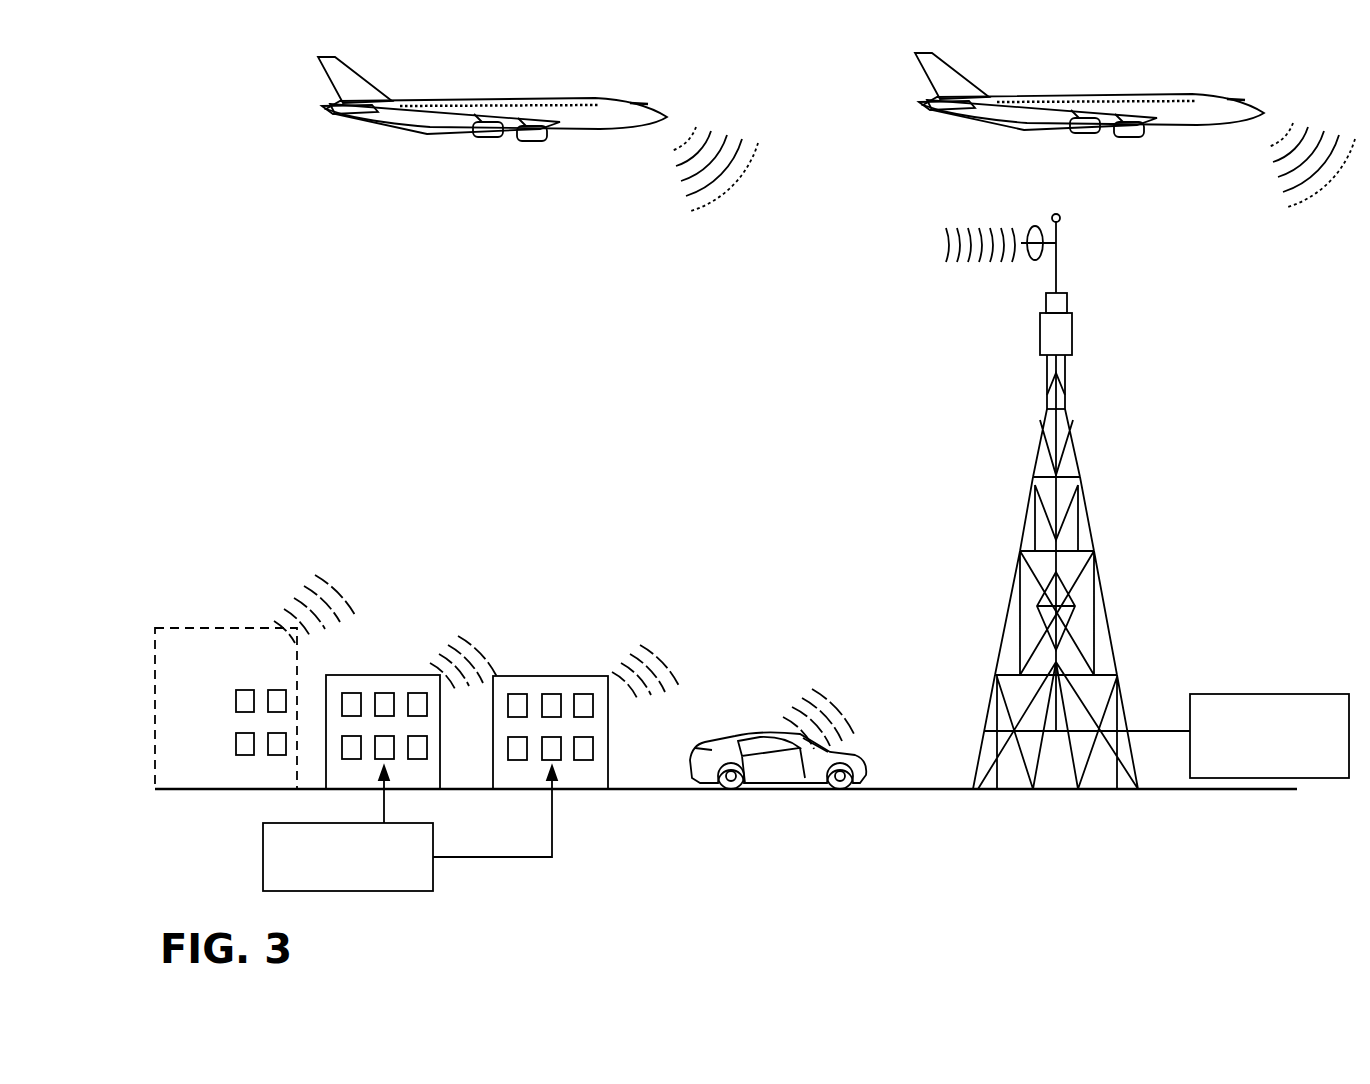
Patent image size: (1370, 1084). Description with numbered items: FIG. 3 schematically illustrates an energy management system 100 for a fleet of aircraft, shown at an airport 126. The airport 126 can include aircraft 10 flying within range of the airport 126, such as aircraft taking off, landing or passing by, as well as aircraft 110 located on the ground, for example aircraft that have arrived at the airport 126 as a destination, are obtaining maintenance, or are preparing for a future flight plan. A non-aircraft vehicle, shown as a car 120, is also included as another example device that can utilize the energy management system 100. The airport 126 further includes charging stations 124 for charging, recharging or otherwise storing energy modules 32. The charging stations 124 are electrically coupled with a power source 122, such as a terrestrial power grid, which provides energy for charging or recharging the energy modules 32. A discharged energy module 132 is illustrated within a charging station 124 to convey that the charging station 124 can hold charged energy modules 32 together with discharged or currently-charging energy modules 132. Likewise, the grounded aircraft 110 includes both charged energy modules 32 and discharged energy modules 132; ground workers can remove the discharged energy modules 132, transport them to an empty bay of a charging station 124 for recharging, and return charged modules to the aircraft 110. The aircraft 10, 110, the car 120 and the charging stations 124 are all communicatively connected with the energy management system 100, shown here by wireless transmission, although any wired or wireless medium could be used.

The aircraft 10 is at (527, 102).
The energy modules 32 is at (288, 740).
The energy management system 100 is at (1266, 694).
The aircraft 110 is at (211, 711).
The car 120 is at (757, 735).
The power source 122 is at (395, 891).
The charging stations 124 is at (380, 675).
The airport 126 is at (626, 371).
The discharged energy module 132 is at (342, 753).